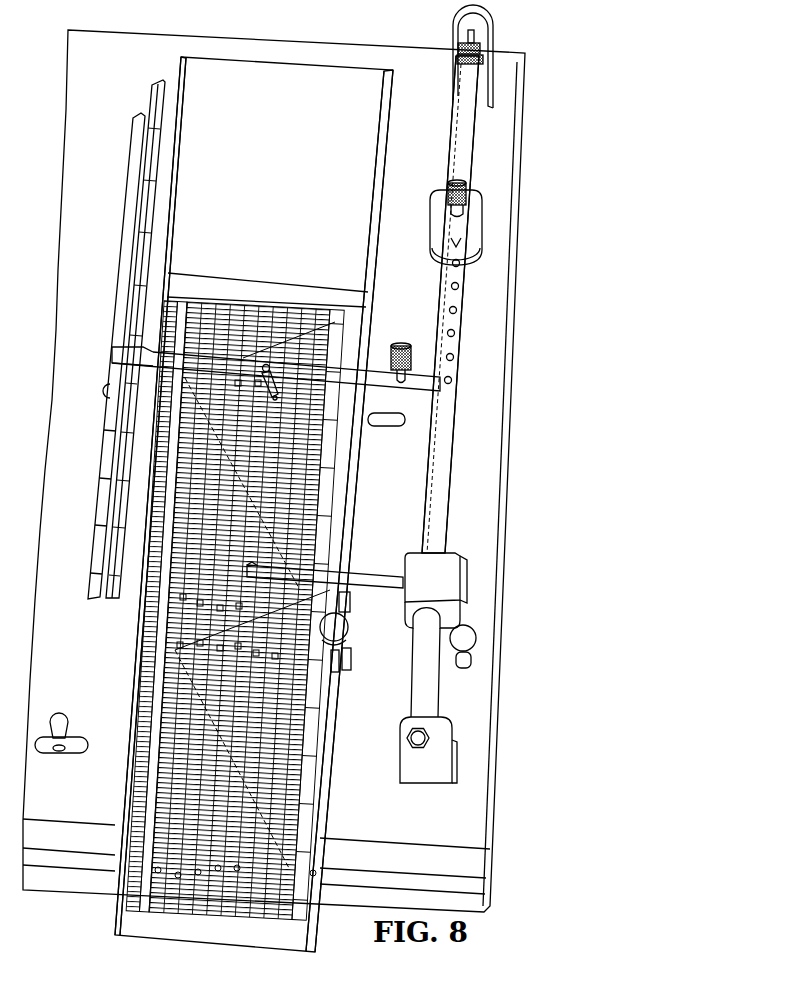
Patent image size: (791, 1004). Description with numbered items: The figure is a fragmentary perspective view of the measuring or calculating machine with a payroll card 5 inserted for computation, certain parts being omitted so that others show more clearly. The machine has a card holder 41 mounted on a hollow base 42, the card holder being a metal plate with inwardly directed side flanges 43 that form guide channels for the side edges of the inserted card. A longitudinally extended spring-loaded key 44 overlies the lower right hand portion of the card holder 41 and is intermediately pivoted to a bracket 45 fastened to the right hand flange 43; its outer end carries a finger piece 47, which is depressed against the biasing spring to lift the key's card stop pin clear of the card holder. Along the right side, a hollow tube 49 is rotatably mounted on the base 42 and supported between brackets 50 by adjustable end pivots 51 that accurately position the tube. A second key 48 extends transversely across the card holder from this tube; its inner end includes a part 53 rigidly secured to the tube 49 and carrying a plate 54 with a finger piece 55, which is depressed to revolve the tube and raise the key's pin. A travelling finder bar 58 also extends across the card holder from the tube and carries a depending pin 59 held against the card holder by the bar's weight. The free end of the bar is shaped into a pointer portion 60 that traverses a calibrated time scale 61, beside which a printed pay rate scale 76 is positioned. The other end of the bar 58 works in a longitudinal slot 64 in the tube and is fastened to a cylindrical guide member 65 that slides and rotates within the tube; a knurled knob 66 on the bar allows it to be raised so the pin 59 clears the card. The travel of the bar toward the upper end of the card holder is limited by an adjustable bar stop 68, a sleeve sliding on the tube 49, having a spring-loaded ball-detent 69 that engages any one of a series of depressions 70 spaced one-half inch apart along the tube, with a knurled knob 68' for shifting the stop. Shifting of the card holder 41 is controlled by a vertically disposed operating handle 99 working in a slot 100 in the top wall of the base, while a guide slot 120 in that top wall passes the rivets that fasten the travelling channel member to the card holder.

The hollow base 42 is at (52, 368).
The card holder 41 is at (380, 256).
The side flanges 43 is at (170, 265).
The payroll card 5 is at (276, 283).
The pay rate scale 76 is at (124, 211).
The time scale 61 is at (157, 92).
The pointer portion 60 is at (108, 353).
The travelling finder bar 58 is at (385, 388).
The depending pin 59 is at (283, 376).
The knurled knob 66 is at (402, 343).
The guide slot 120 is at (372, 428).
The tube 49 is at (443, 503).
The cylindrical guide member 65 is at (452, 418).
The longitudinal slot 64 is at (428, 470).
The detent-receiving depressions 70 is at (462, 287).
The brackets 50 is at (453, 27).
The end pivots 51 is at (481, 37).
The adjustable bar stop 68 is at (444, 227).
The knurled knob 68' is at (478, 195).
The spring-loaded ball-detent 69 is at (462, 243).
The second key 48 is at (372, 572).
The tube-carried part 53 is at (432, 635).
The plate 54 is at (466, 595).
The finger piece 55 is at (454, 668).
The bracket 45 is at (353, 614).
The finger piece 47 is at (350, 630).
The spring-loaded key 44 is at (351, 657).
The operating handle 99 is at (65, 715).
The slot 100 is at (70, 755).